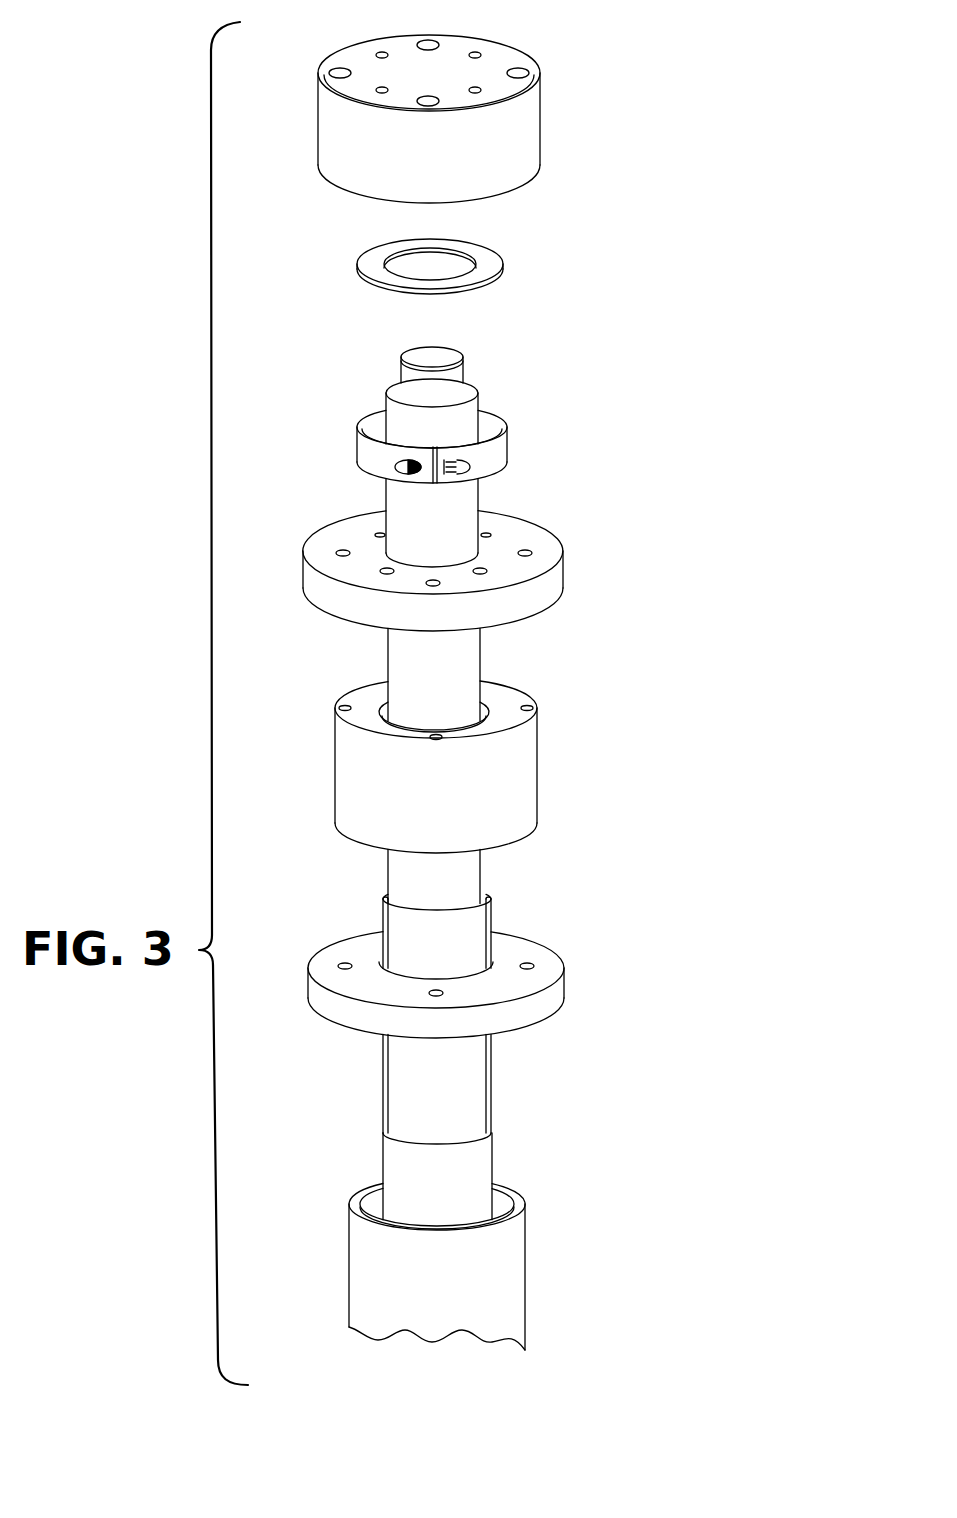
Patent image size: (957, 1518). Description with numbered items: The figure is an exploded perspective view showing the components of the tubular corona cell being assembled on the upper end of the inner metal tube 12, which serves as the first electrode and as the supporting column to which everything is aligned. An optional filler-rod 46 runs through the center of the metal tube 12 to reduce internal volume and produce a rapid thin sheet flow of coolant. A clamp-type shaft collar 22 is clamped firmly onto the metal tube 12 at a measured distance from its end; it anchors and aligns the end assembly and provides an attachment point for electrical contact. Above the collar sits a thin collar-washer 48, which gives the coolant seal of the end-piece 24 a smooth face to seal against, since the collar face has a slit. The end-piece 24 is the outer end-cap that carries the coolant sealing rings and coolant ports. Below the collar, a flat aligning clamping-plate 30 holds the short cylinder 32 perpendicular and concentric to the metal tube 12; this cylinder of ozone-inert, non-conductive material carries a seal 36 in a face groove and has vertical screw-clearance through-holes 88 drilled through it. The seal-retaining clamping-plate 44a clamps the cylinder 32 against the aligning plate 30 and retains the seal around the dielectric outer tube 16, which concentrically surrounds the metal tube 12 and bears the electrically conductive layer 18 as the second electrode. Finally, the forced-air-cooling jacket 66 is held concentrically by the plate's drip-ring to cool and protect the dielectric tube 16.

The end-piece 24 is at (542, 110).
The collar-washer 48 is at (493, 250).
The filler-rod 46 is at (419, 347).
The inner metal tube 12 is at (463, 385).
The collar 22 is at (507, 445).
The aligning clamping-plate 30 is at (560, 567).
The screw-clearance through-hole 88 is at (342, 705).
The seal 36 is at (483, 707).
The short cylinder 32 is at (448, 749).
The outer tube 16 is at (492, 908).
The seal-retaining clamping-plate 44a is at (565, 983).
The electrically conductive layer 18 is at (493, 1153).
The forced-air-cooling jacket 66 is at (527, 1233).